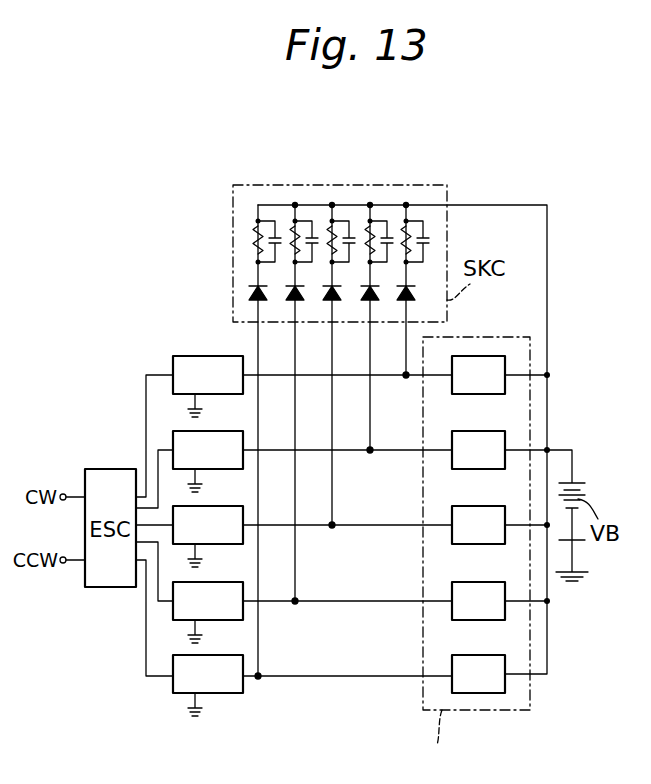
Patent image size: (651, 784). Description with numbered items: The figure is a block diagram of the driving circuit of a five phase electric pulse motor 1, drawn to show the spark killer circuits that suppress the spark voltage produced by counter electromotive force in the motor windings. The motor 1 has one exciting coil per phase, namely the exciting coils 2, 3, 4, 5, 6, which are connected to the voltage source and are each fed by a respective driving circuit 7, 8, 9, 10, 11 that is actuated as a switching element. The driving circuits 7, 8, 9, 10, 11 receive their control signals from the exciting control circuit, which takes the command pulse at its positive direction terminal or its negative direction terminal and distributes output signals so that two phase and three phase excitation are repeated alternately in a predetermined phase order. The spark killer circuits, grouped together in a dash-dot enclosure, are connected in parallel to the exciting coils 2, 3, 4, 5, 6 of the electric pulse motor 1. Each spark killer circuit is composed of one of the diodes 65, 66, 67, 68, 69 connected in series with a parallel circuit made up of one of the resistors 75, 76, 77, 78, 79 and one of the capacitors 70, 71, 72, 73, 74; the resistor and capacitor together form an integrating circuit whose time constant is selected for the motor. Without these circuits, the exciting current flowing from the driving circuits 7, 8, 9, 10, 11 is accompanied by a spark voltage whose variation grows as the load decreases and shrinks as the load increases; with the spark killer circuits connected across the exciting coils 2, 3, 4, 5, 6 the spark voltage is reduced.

The electric pulse motor 1 is at (508, 389).
The exciting coil CA 2 is at (505, 393).
The exciting coil CB 3 is at (505, 469).
The exciting coil CC 4 is at (505, 544).
The exciting coil CD 5 is at (505, 620).
The exciting coil CE 6 is at (505, 693).
The driving circuit DRA 7 is at (228, 356).
The driving circuit DRB 8 is at (240, 431).
The driving circuit DRC 9 is at (240, 506).
The driving circuit DRD 10 is at (243, 582).
The driving circuit DRE 11 is at (243, 655).
The diode 65 is at (412, 293).
The diode 66 is at (376, 293).
The diode 67 is at (338, 293).
The diode 68 is at (301, 293).
The diode 69 is at (264, 293).
The capacitor 70 is at (430, 243).
The capacitor 71 is at (394, 243).
The capacitor 72 is at (356, 243).
The capacitor 73 is at (319, 243).
The capacitor 74 is at (282, 243).
The resistor 75 is at (408, 228).
The resistor 76 is at (372, 228).
The resistor 77 is at (334, 228).
The resistor 78 is at (297, 228).
The resistor 79 is at (260, 228).